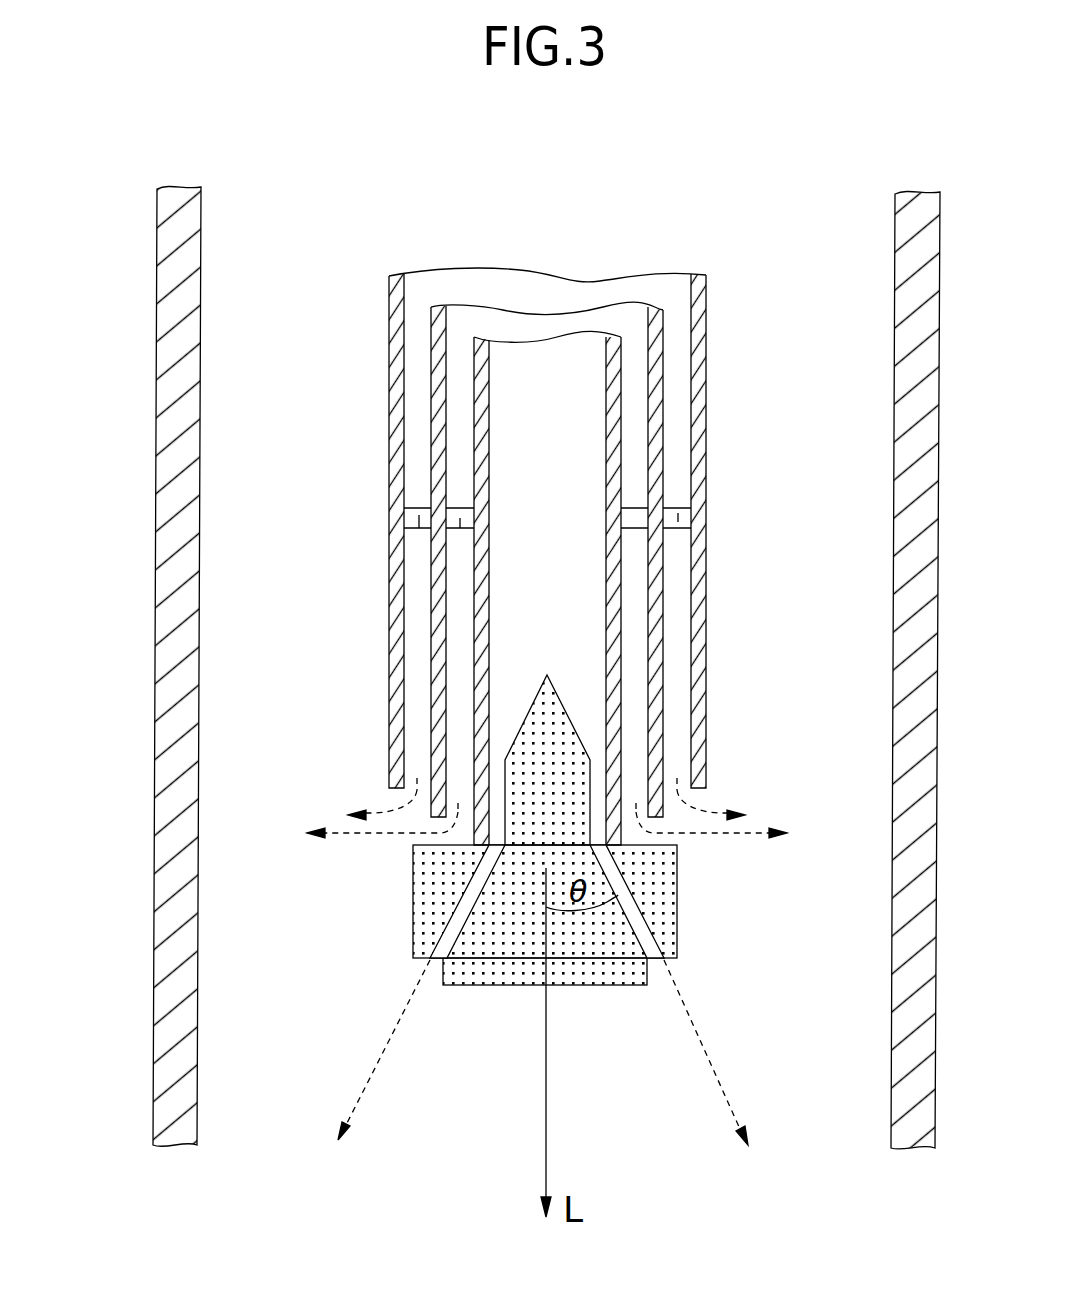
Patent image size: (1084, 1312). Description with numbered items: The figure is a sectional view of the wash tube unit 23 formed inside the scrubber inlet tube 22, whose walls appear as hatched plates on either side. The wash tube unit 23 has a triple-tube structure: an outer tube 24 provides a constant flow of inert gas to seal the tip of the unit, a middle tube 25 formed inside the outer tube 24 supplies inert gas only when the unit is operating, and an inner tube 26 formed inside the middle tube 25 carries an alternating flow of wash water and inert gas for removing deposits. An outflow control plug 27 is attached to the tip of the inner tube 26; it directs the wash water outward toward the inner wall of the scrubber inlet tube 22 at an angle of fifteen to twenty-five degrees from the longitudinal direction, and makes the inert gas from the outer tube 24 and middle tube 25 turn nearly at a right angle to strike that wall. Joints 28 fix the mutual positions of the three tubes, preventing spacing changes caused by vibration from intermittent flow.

The scrubber inlet tube 22 is at (178, 609).
The wash tube unit 23 is at (724, 403).
The outer tube 24 is at (699, 698).
The middle tube 25 is at (655, 611).
The inner tube 26 is at (483, 393).
The outflow control plug 27 is at (660, 897).
The joints 28 is at (460, 530).